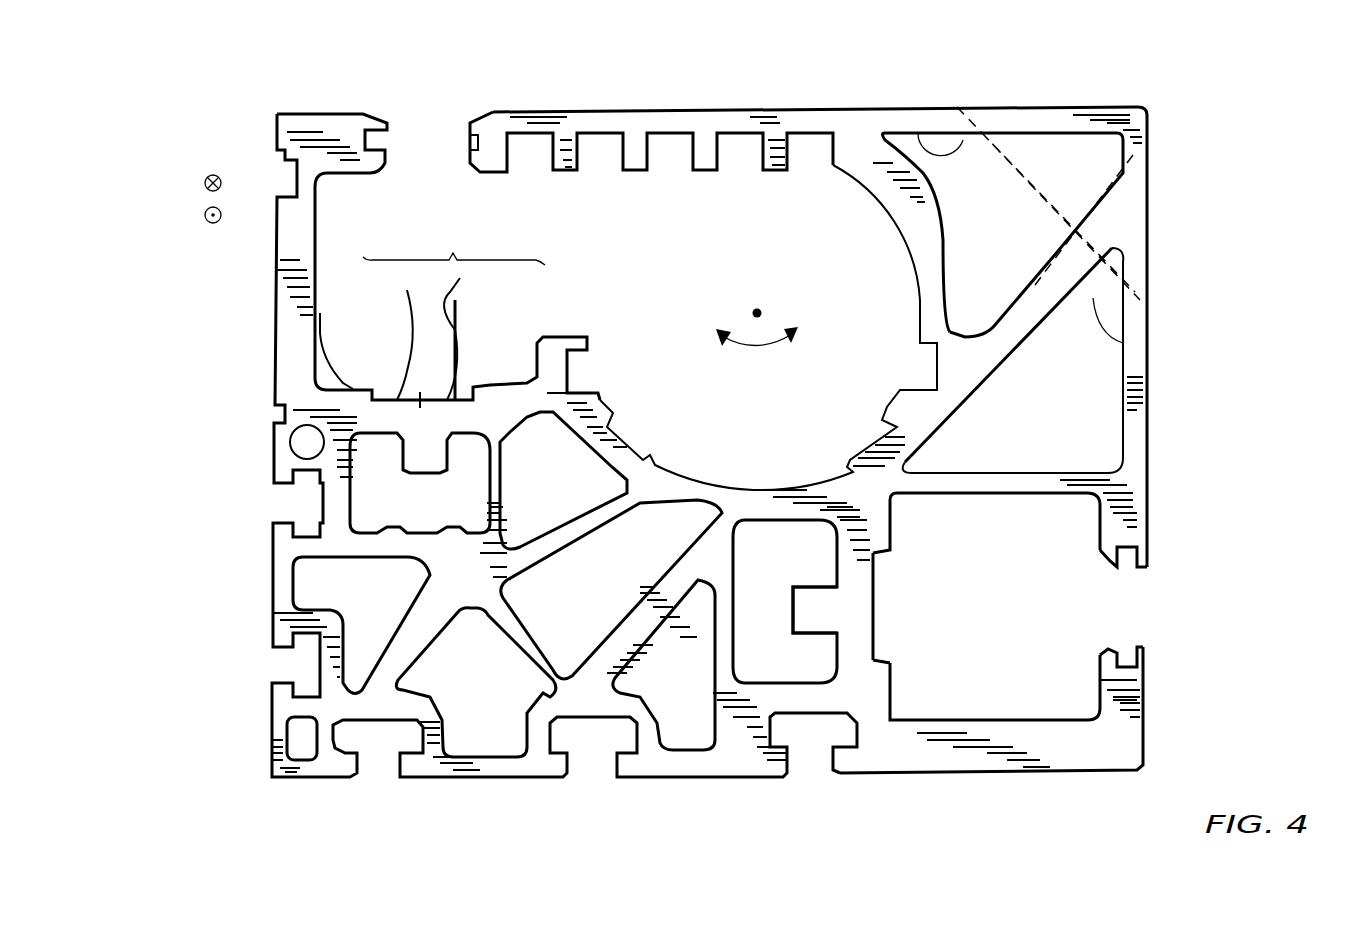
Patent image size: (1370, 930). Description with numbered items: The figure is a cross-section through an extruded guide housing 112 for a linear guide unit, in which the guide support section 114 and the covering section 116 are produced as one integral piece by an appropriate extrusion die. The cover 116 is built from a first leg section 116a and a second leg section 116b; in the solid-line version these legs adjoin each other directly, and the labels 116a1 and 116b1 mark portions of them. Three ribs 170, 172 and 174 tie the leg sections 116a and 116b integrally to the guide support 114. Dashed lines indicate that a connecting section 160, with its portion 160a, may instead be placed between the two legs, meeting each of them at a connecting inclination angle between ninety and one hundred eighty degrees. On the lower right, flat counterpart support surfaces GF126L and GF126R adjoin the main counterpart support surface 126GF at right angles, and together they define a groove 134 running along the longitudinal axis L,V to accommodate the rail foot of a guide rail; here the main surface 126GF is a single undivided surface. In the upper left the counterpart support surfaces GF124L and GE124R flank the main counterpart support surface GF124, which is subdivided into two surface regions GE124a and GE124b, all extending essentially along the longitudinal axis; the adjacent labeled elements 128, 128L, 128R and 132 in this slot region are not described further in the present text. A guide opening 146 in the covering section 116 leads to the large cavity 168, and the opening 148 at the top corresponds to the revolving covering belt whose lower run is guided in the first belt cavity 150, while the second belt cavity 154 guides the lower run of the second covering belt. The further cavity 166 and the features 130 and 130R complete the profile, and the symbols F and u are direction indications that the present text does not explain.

The guide housing 112 is at (245, 379).
The guide support section 114 is at (876, 747).
The covering section 116 is at (1032, 112).
The first leg section 116a is at (628, 122).
The top face of rail 116a1 is at (858, 108).
The second leg section 116b is at (1142, 411).
The right side wall upper part 116b1 is at (1148, 360).
The covering belt 148 is at (436, 115).
The upper left cavity 166 is at (381, 239).
The groove 128 is at (466, 412).
The left side of groove 128L is at (356, 342).
The right side of groove 128R is at (495, 383).
The groove bottom 132 is at (425, 420).
The main counterpart support surface GF124 is at (454, 243).
The left counterpart support surface GF124L is at (362, 351).
The first surface region of main counterpart support surface GE124a is at (406, 332).
The second surface region of main counterpart support surface GE124b is at (494, 332).
The right counterpart support surface GE124R is at (470, 385).
The first belt cavity 150 is at (435, 514).
The second belt cavity 154 is at (785, 616).
The groove 134 is at (872, 615).
The lower right cavity 168 is at (1067, 617).
The main counterpart support surface 126GF is at (874, 630).
The left counterpart support surface GF126L is at (874, 555).
The right counterpart support surface GF126R is at (878, 657).
The groove 130 is at (853, 652).
The right side of groove 130 130R is at (873, 675).
The guide opening 146 is at (1126, 613).
The rib 170 is at (930, 254).
The rib 172 is at (1008, 330).
The rib 174 is at (987, 487).
The connecting section 160 is at (1042, 201).
The hidden line 160a is at (1148, 156).
The longitudinal axis L,V is at (757, 309).
The rotation direction u is at (753, 350).
The force direction F is at (204, 217).